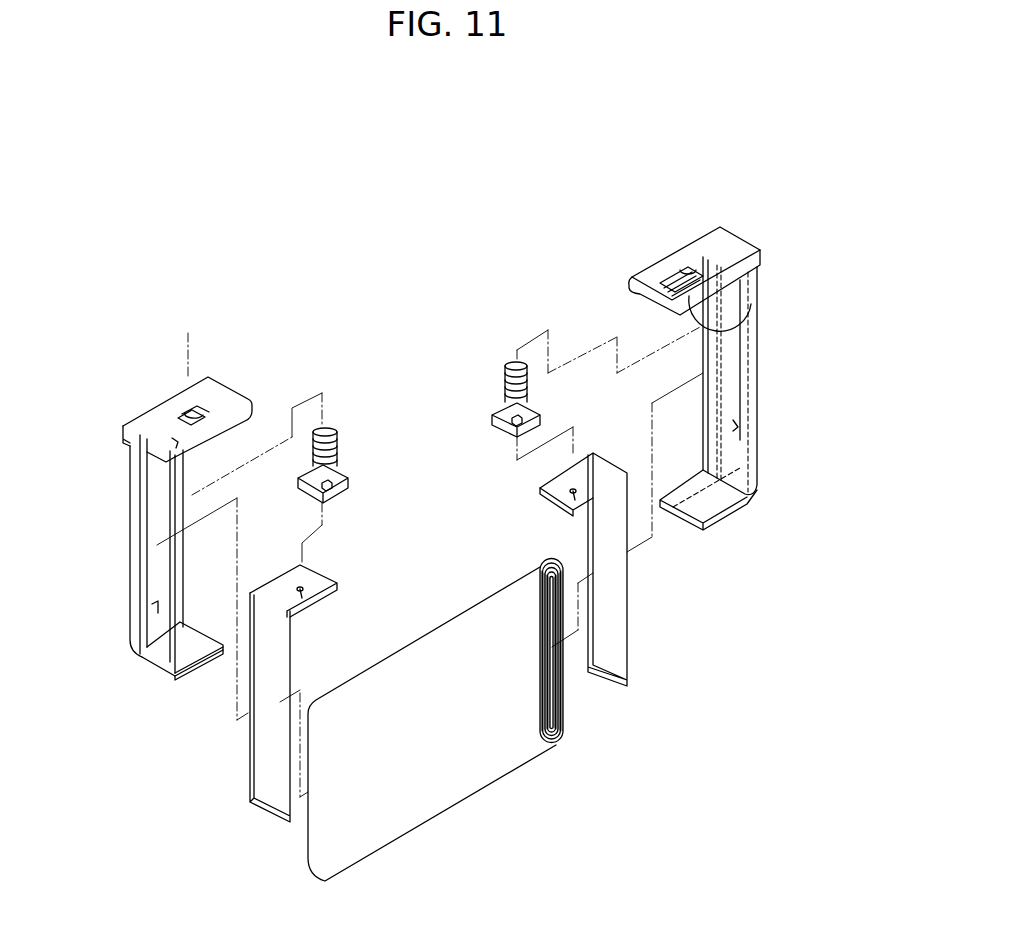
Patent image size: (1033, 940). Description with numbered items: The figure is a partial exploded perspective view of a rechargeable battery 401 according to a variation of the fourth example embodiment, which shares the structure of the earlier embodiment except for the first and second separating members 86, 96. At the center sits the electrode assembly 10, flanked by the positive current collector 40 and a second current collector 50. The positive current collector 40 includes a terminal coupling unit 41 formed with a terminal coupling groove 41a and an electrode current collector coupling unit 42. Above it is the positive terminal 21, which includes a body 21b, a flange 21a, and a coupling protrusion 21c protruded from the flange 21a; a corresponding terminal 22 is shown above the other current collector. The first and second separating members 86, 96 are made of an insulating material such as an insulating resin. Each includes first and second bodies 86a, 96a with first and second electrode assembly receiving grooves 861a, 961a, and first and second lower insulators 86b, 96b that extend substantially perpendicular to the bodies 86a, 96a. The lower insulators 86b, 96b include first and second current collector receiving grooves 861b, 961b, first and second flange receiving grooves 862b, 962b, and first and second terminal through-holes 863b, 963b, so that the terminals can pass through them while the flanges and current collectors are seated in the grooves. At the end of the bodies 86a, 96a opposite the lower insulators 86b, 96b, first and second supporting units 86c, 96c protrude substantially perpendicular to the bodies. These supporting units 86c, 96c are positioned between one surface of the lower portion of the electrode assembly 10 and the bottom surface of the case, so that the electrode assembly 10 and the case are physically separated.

The rechargeable battery 401 is at (427, 213).
The electrode assembly 10 is at (569, 723).
The positive terminal 21 is at (344, 427).
The flange 21a is at (347, 478).
The body 21b is at (338, 448).
The coupling protrusion 21c is at (329, 490).
The second bolt 22 is at (498, 390).
The positive current collector 40 is at (246, 768).
The terminal coupling unit 41 is at (338, 578).
The terminal coupling groove 41a is at (303, 590).
The electrode current collector coupling unit 42 is at (262, 745).
The second side plate 50 is at (636, 633).
The first separating member 86 is at (209, 372).
The first body 86a is at (130, 572).
The first lower insulator 86b is at (170, 404).
The first supporting unit 86c is at (170, 651).
The first electrode assembly receiving groove 861a is at (150, 606).
The first current collector receiving groove 861b is at (150, 424).
The first flange receiving groove 862b is at (173, 442).
The first terminal through-hole 863b is at (203, 425).
The second separating member 96 is at (763, 227).
The second body 96a is at (754, 388).
The second lower insulator 96b is at (646, 277).
The second supporting unit 96c is at (711, 500).
The second electrode assembly receiving groove 961a is at (744, 434).
The second current collector receiving groove 961b is at (687, 272).
The second flange receiving groove 962b is at (660, 298).
The second terminal through-hole 963b is at (753, 317).